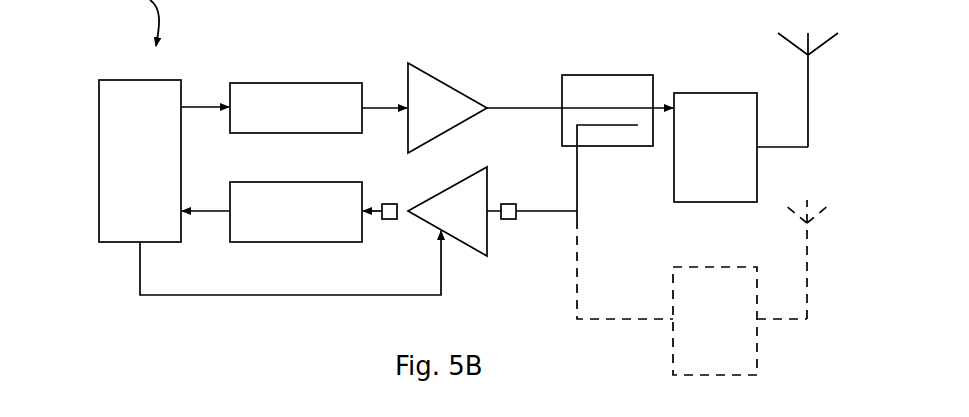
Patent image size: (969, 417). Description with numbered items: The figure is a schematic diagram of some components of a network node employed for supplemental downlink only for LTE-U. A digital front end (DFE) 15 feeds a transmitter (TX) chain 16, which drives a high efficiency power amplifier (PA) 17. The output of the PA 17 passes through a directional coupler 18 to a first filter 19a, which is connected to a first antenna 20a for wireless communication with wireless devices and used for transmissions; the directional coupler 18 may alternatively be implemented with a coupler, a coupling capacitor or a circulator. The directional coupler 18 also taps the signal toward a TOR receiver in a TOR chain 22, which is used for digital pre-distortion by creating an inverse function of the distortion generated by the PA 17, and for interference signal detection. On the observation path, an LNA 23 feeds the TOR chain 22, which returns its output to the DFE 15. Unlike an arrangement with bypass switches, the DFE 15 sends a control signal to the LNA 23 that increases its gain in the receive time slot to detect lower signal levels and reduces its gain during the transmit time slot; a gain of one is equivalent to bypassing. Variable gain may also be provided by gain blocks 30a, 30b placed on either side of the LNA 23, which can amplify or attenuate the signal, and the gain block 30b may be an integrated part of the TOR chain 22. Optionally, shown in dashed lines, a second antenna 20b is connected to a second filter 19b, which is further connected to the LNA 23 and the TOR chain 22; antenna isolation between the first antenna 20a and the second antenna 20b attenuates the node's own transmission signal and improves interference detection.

The digital front end (DFE) 15 is at (113, 110).
The transmitter (TX) chain 16 is at (300, 83).
The high efficiency power amplifier (PA) 17 is at (447, 86).
The directional coupler 18 is at (605, 75).
The first filter 19a is at (712, 93).
The second filter 19b is at (673, 340).
The first antenna 20a is at (815, 55).
The second antenna 20b is at (812, 225).
The TOR chain 22 is at (297, 182).
The LNA 23 is at (453, 186).
The gain block 30a is at (508, 220).
The gain block 30b is at (389, 220).